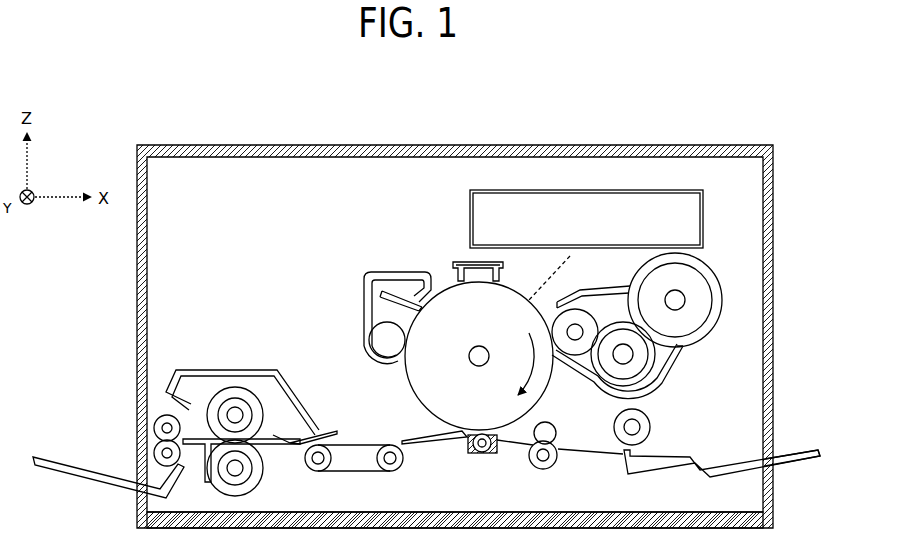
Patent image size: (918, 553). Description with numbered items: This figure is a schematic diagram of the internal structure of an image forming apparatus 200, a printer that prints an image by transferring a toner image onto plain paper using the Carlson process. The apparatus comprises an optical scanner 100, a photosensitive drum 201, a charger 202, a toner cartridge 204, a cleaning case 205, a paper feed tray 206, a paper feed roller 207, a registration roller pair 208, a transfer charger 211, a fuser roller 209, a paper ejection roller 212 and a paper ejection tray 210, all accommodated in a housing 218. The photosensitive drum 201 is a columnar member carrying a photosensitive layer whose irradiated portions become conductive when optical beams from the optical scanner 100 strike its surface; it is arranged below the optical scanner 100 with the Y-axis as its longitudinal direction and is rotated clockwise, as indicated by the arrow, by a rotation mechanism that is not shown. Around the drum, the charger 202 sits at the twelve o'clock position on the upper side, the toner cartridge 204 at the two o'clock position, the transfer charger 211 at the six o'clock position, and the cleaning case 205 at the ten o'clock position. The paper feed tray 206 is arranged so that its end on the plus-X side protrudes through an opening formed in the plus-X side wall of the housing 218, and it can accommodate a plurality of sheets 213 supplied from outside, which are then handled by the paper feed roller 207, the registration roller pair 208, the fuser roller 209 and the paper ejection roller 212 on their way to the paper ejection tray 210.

The optical scanner 100 is at (705, 212).
The image forming apparatus 200 is at (645, 113).
The photosensitive drum 201 is at (451, 285).
The charger 202 is at (453, 262).
The toner cartridge 204 is at (714, 266).
The cleaning case 205 is at (362, 318).
The paper feed tray 206 is at (792, 460).
The paper feed roller 207 is at (650, 420).
The registration roller pair 208 is at (553, 466).
The fuser roller 209 is at (232, 384).
The paper ejection tray 210 is at (78, 466).
The transfer charger 211 is at (483, 458).
The paper ejection roller 212 is at (158, 414).
The sheets 213 is at (712, 453).
The housing 218 is at (733, 145).